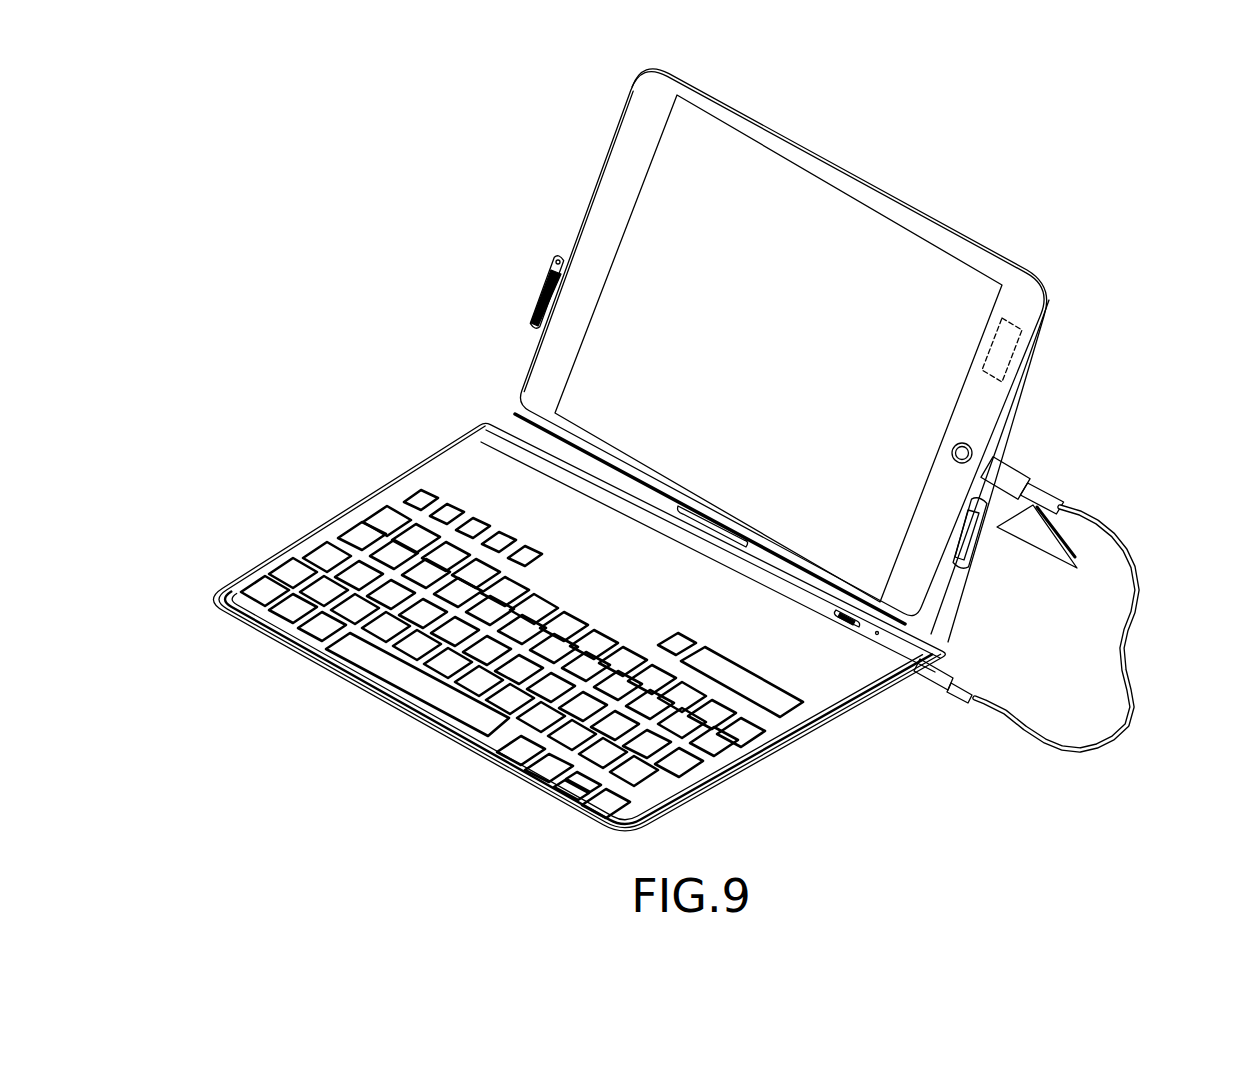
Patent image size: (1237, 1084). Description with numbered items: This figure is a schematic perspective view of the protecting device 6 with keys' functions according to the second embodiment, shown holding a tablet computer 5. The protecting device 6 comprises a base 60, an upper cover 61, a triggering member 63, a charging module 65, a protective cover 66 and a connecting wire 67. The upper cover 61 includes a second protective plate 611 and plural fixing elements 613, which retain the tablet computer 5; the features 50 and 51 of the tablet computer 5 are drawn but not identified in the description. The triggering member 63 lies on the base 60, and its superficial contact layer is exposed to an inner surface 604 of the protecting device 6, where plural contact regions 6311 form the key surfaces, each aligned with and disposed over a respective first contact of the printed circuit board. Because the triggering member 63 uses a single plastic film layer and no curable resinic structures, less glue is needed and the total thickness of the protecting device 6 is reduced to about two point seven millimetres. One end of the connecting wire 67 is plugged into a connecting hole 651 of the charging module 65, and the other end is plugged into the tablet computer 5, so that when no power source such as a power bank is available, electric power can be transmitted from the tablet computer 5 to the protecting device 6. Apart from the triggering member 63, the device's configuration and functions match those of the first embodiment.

The tablet computer 5 is at (789, 344).
The display screen 50 is at (770, 170).
The connector 51 is at (1010, 350).
The protecting device 6 is at (696, 450).
The upper cover 61 is at (962, 604).
The second protective plate 611 is at (1055, 553).
The fixing elements 613 is at (540, 288).
The protective cover 66 is at (506, 425).
The base 60 is at (579, 626).
The inner surface 604 is at (785, 733).
The triggering member 63 is at (511, 622).
The contact regions 6311 is at (360, 530).
The charging module 65 is at (845, 622).
The connecting hole 651 is at (905, 673).
The connecting wire 67 is at (1133, 675).